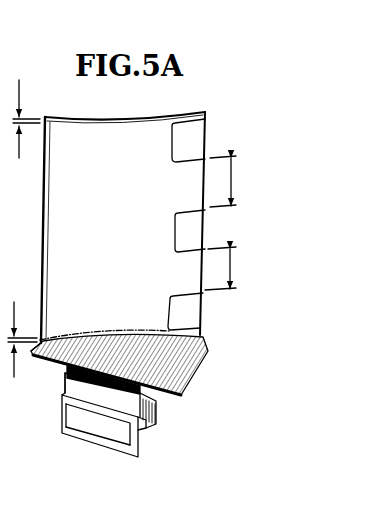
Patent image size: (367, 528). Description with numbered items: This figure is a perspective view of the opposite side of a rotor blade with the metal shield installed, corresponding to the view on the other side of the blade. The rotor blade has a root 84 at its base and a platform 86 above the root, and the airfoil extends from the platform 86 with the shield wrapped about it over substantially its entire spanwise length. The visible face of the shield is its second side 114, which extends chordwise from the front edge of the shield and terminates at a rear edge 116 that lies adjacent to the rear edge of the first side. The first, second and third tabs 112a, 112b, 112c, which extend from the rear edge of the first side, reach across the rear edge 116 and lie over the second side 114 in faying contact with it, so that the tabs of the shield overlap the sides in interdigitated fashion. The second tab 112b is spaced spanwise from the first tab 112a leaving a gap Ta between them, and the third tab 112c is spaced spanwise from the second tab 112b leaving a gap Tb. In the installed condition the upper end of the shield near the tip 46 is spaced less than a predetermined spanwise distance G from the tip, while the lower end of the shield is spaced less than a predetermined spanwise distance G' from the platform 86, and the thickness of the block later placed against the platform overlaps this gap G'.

The blade tip 46 is at (100, 120).
The root 84 is at (63, 413).
The platform 86 is at (180, 372).
The first tab 112a is at (188, 140).
The second tab 112b is at (193, 233).
The third tab 112c is at (187, 313).
The second side 114 is at (127, 240).
The rear edge 116 is at (202, 268).
The gap Ta is at (232, 177).
The gap Tb is at (232, 271).
The predetermined spanwise distance G is at (26, 106).
The predetermined spanwise distance G' is at (22, 352).